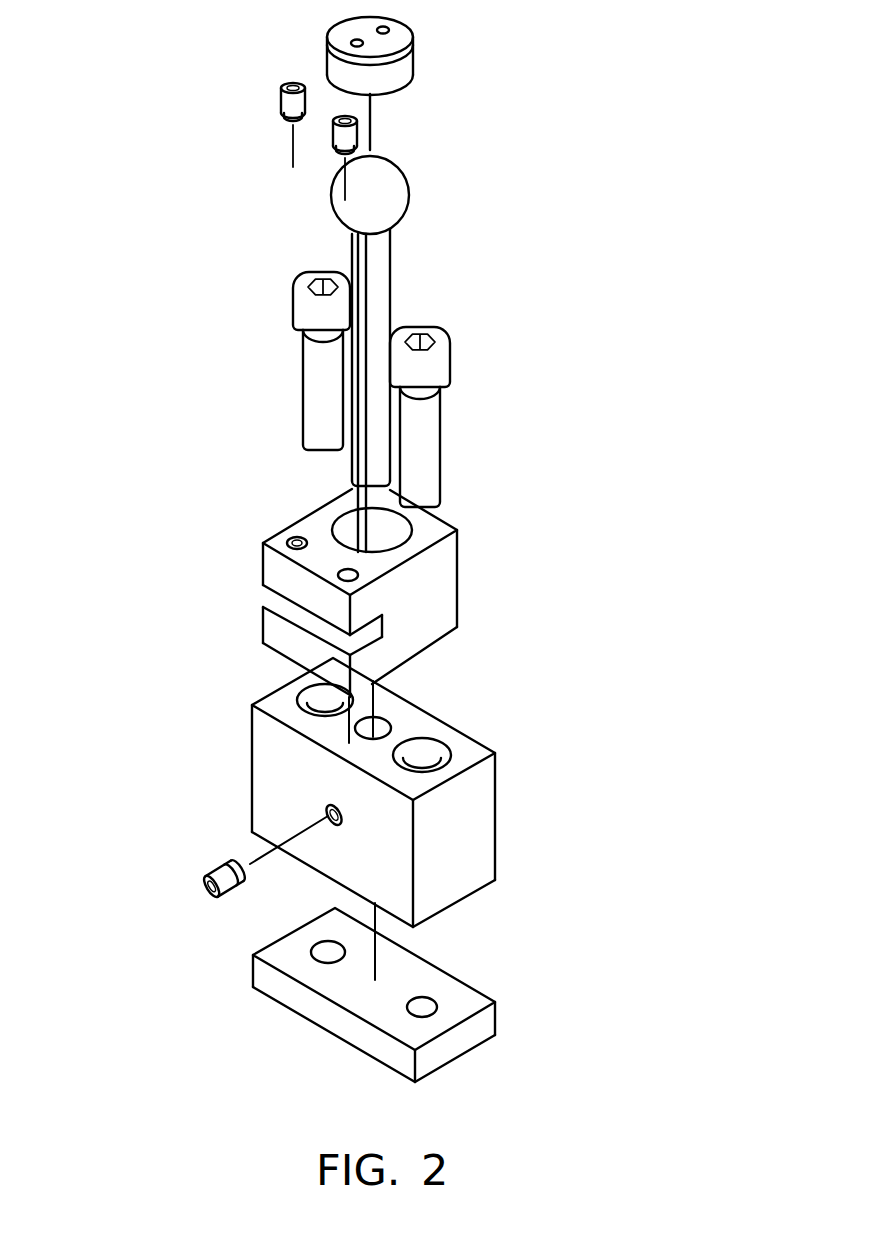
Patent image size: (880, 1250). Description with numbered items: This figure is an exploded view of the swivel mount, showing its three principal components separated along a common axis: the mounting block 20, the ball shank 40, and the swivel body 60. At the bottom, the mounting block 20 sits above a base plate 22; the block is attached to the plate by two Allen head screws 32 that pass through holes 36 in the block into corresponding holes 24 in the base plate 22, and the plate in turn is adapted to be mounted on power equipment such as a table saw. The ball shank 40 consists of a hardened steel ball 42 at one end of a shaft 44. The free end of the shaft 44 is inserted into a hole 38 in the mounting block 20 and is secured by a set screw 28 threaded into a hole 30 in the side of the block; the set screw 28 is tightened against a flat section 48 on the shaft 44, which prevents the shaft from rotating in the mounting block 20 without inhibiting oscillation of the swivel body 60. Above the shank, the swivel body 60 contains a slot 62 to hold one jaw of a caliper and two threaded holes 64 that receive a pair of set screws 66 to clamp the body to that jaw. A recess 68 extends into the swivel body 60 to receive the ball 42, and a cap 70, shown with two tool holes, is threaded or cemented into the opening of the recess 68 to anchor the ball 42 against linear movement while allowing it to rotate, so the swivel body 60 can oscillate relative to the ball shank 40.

The mounting block 20 is at (359, 819).
The base plate 22 is at (446, 995).
The holes 24 is at (523, 1020).
The set screw 28 is at (212, 876).
The hole 30 is at (328, 810).
The Allen head screws 32 is at (437, 365).
The holes 36 is at (316, 698).
The hole 38 is at (382, 728).
The ball shank 40 is at (359, 354).
The ball 42 is at (391, 192).
The shaft 44 is at (380, 287).
The flat section 48 is at (357, 261).
The swivel body 60 is at (359, 593).
The slot 62 is at (380, 623).
The threaded holes 64 is at (292, 541).
The set screws 66 is at (293, 107).
The recess 68 is at (392, 528).
The cap 70 is at (391, 44).